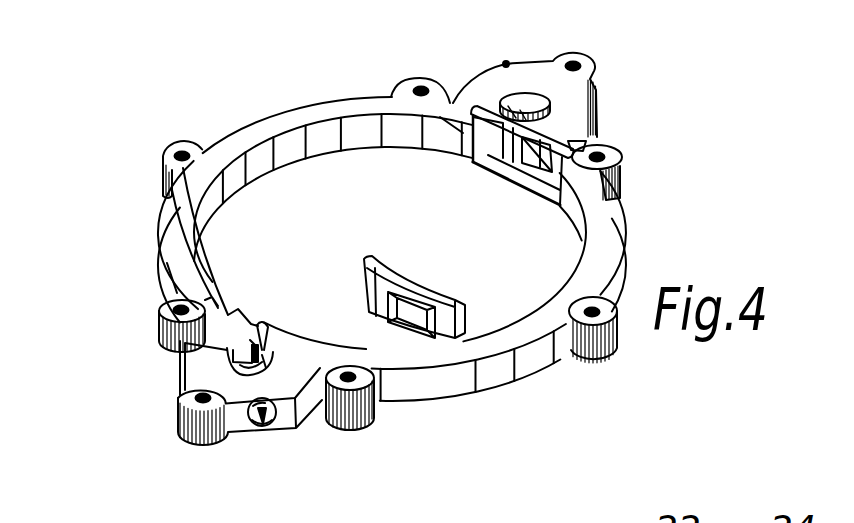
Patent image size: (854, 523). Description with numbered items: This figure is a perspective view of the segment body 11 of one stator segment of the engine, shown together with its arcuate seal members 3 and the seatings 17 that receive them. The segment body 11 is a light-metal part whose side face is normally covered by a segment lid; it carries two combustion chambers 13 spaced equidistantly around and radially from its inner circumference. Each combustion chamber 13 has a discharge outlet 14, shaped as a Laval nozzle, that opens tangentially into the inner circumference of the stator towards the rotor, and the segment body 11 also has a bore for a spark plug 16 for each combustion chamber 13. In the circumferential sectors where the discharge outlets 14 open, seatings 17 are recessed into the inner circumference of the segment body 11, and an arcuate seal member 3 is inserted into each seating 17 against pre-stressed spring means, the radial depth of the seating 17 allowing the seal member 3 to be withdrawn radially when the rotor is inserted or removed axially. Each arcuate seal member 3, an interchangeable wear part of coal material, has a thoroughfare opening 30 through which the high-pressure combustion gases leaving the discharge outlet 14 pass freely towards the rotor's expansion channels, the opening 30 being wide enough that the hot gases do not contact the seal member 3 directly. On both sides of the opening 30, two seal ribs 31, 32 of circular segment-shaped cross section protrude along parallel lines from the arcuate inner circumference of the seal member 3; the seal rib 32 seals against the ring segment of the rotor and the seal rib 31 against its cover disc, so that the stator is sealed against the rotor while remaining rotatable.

The arcuate seal member 3 is at (550, 143).
The segment body 11 is at (495, 380).
The combustion chamber 13 is at (528, 103).
The discharge outlet 14 is at (572, 150).
The spark plug 16 is at (506, 64).
The seating 17 is at (275, 340).
The thoroughfare opening 30 is at (537, 163).
The seal rib 31 is at (456, 105).
The seal rib 32 is at (462, 145).